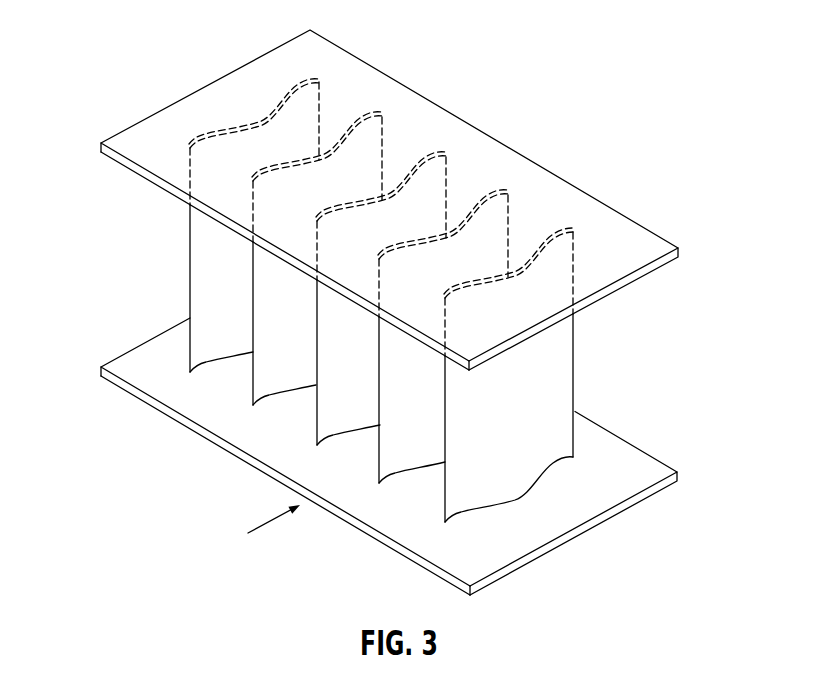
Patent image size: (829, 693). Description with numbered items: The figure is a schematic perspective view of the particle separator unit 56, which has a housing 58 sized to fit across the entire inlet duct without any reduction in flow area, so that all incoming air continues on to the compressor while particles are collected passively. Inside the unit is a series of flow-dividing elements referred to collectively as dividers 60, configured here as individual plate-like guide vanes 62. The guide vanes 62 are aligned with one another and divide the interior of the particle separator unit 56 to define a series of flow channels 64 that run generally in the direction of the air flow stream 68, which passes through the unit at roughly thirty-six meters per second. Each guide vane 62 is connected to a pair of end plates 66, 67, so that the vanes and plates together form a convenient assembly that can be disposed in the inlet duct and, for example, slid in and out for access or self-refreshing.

The particle separator unit 56 is at (389, 307).
The housing 58 is at (386, 456).
The dividers 60 is at (402, 200).
The guide vanes 62 is at (329, 417).
The flow channels 64 is at (423, 118).
The end plate 66 is at (632, 504).
The end plate 67 is at (638, 284).
The air flow stream 68 is at (260, 522).